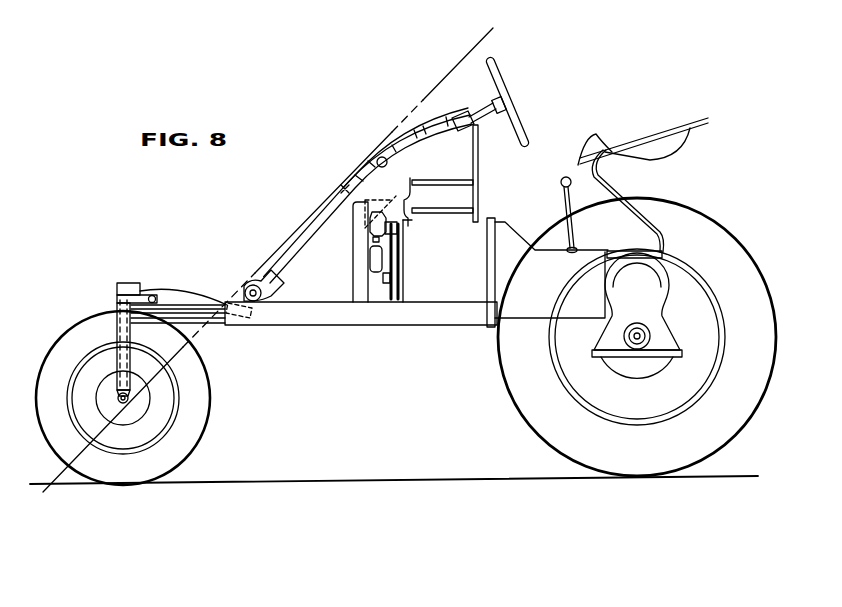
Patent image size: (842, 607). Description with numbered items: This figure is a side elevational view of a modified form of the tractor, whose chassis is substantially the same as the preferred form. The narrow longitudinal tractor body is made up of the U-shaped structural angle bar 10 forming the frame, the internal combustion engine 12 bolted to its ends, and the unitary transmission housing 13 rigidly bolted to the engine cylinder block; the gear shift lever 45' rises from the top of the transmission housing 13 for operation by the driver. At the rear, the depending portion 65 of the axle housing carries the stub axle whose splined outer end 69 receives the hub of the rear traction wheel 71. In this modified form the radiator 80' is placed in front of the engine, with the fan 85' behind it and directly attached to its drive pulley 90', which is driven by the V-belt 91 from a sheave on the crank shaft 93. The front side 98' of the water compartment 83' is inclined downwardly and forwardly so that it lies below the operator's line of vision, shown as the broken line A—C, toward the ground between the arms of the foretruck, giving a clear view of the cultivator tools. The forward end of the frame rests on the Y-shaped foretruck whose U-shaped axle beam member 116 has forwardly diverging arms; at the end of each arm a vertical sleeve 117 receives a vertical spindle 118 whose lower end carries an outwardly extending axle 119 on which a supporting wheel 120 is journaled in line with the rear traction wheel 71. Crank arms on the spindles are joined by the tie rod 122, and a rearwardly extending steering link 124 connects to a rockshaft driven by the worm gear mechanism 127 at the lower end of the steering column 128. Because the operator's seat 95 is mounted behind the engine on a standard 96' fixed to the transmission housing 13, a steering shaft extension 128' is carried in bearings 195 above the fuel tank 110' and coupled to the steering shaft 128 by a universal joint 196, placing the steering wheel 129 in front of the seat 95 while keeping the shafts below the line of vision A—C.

The operator's line of vision (forward end) A is at (344, 175).
The operator's line of vision (rear end) C is at (110, 432).
The structural angle bar 10 is at (325, 315).
The internal combustion engine 12 is at (466, 262).
The transmission housing 13 is at (552, 288).
The gear shift lever 45' is at (550, 215).
The depending portion of the axle housing 65 is at (665, 325).
The splined outer end of stub axle 69 is at (627, 333).
The rear traction wheel 71 is at (532, 410).
The radiator 80' is at (357, 249).
The water compartment 83' is at (418, 202).
The fan 85' is at (351, 265).
The drive pulley 90' is at (413, 226).
The V-belt 91 is at (395, 252).
The crank shaft 93 is at (390, 276).
The seat 95 is at (707, 120).
The standard 96' is at (630, 204).
The front side of water compartment 98' is at (330, 174).
The fuel tank 110' is at (488, 173).
The U-shaped axle beam member 116 is at (207, 317).
The sleeve 117 is at (115, 320).
The vertical spindle 118 is at (116, 335).
The axle 119 is at (128, 390).
The supporting wheel 120 is at (193, 430).
The tie rod 122 is at (152, 286).
The steering link 124 is at (180, 291).
The worm gear mechanism 127 is at (253, 283).
The steering column 128 is at (368, 199).
The steering shaft extension 128' is at (452, 111).
The steering wheel 129 is at (496, 78).
The bearings 195 is at (410, 138).
The universal joint 196 is at (377, 155).